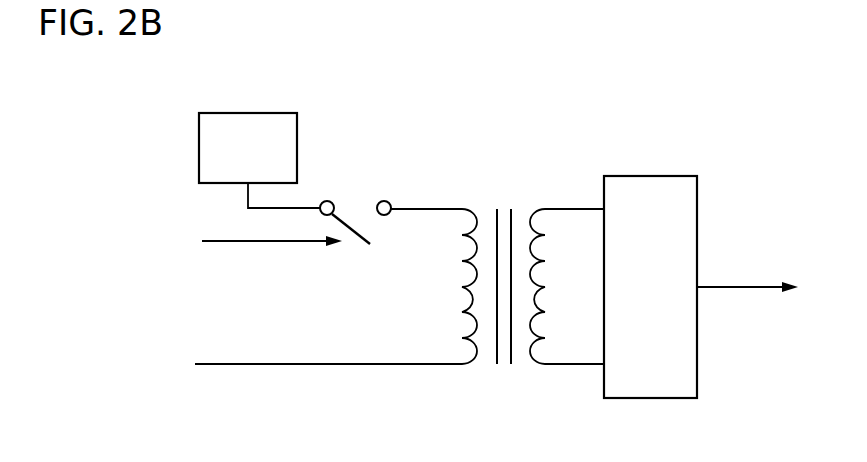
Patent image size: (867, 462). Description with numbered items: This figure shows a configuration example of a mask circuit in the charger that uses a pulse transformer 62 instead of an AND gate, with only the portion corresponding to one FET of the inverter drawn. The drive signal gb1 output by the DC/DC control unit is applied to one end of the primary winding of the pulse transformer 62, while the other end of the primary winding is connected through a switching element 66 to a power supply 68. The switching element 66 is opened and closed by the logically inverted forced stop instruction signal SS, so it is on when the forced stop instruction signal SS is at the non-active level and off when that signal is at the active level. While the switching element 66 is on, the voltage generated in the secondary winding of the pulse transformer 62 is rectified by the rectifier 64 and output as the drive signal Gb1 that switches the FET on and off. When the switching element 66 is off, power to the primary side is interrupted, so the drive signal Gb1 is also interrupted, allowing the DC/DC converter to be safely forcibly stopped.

The power supply 68 is at (247, 113).
The switching element 66 is at (360, 205).
The pulse transformer 62 is at (482, 371).
The rectifier 64 is at (647, 176).
The forced stop instruction signal SS is at (293, 242).
The drive signal gb1 is at (248, 365).
The drive signal Gb1 is at (742, 286).